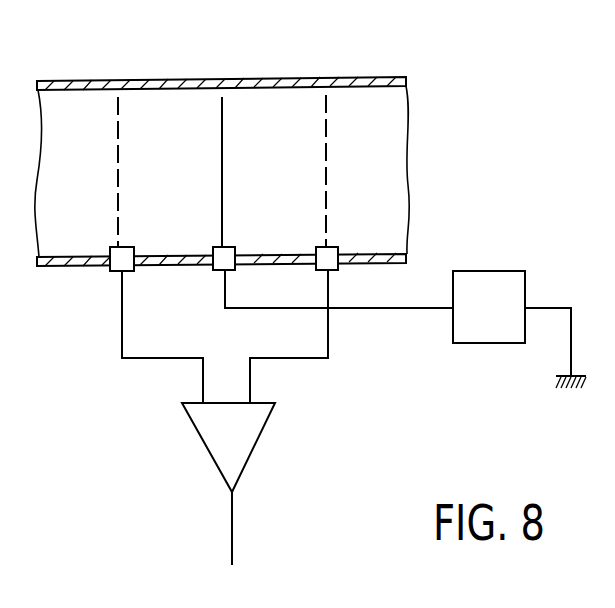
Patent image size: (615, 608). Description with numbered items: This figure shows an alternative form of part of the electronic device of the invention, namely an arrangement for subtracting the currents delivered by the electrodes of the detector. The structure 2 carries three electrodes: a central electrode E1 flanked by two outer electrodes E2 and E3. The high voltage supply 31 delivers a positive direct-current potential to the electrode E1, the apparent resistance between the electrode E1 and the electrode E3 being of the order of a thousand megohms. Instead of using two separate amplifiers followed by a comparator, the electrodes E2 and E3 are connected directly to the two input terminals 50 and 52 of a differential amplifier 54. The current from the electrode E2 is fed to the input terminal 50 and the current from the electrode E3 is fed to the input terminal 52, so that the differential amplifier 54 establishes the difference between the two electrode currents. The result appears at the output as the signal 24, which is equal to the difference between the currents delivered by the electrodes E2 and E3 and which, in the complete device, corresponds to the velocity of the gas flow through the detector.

The insulating substrate 2 is at (87, 82).
The electrode E1 is at (224, 124).
The electrode E2 is at (118, 198).
The electrode E3 is at (328, 212).
The high voltage supply 31 is at (500, 319).
The input terminal 50 is at (203, 378).
The input terminal 52 is at (250, 380).
The differential amplifier 54 is at (224, 441).
The signal 24 is at (232, 542).